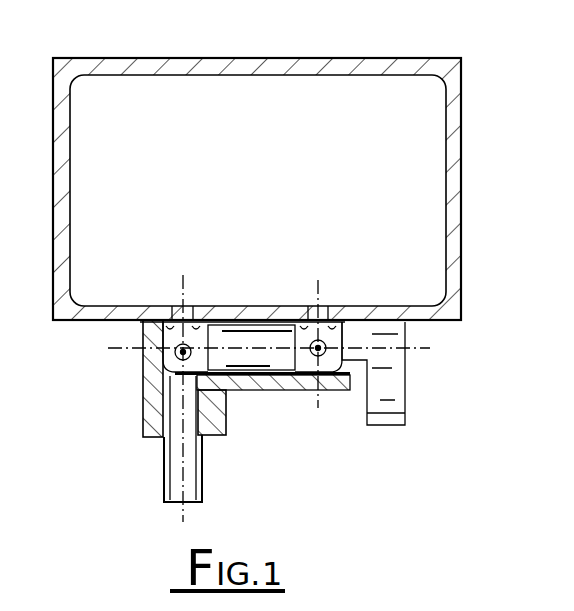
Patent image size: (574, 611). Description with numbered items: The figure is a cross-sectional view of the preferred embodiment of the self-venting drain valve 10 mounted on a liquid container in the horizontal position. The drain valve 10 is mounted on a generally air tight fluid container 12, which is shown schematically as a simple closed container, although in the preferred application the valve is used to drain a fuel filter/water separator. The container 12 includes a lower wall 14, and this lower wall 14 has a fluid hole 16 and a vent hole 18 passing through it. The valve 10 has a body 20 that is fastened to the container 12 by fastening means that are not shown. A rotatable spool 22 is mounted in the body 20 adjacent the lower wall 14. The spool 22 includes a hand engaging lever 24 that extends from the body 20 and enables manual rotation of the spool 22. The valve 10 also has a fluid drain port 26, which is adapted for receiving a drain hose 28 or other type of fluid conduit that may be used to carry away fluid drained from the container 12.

The self-venting drain valve 10 is at (323, 424).
The fluid container 12 is at (232, 56).
The lower wall 14 is at (98, 306).
The fluid hole 16 is at (178, 306).
The vent hole 18 is at (310, 306).
The body 20 is at (142, 388).
The rotatable spool 22 is at (250, 392).
The hand engaging lever 24 is at (388, 376).
The fluid drain port 26 is at (142, 437).
The drain hose 28 is at (165, 462).